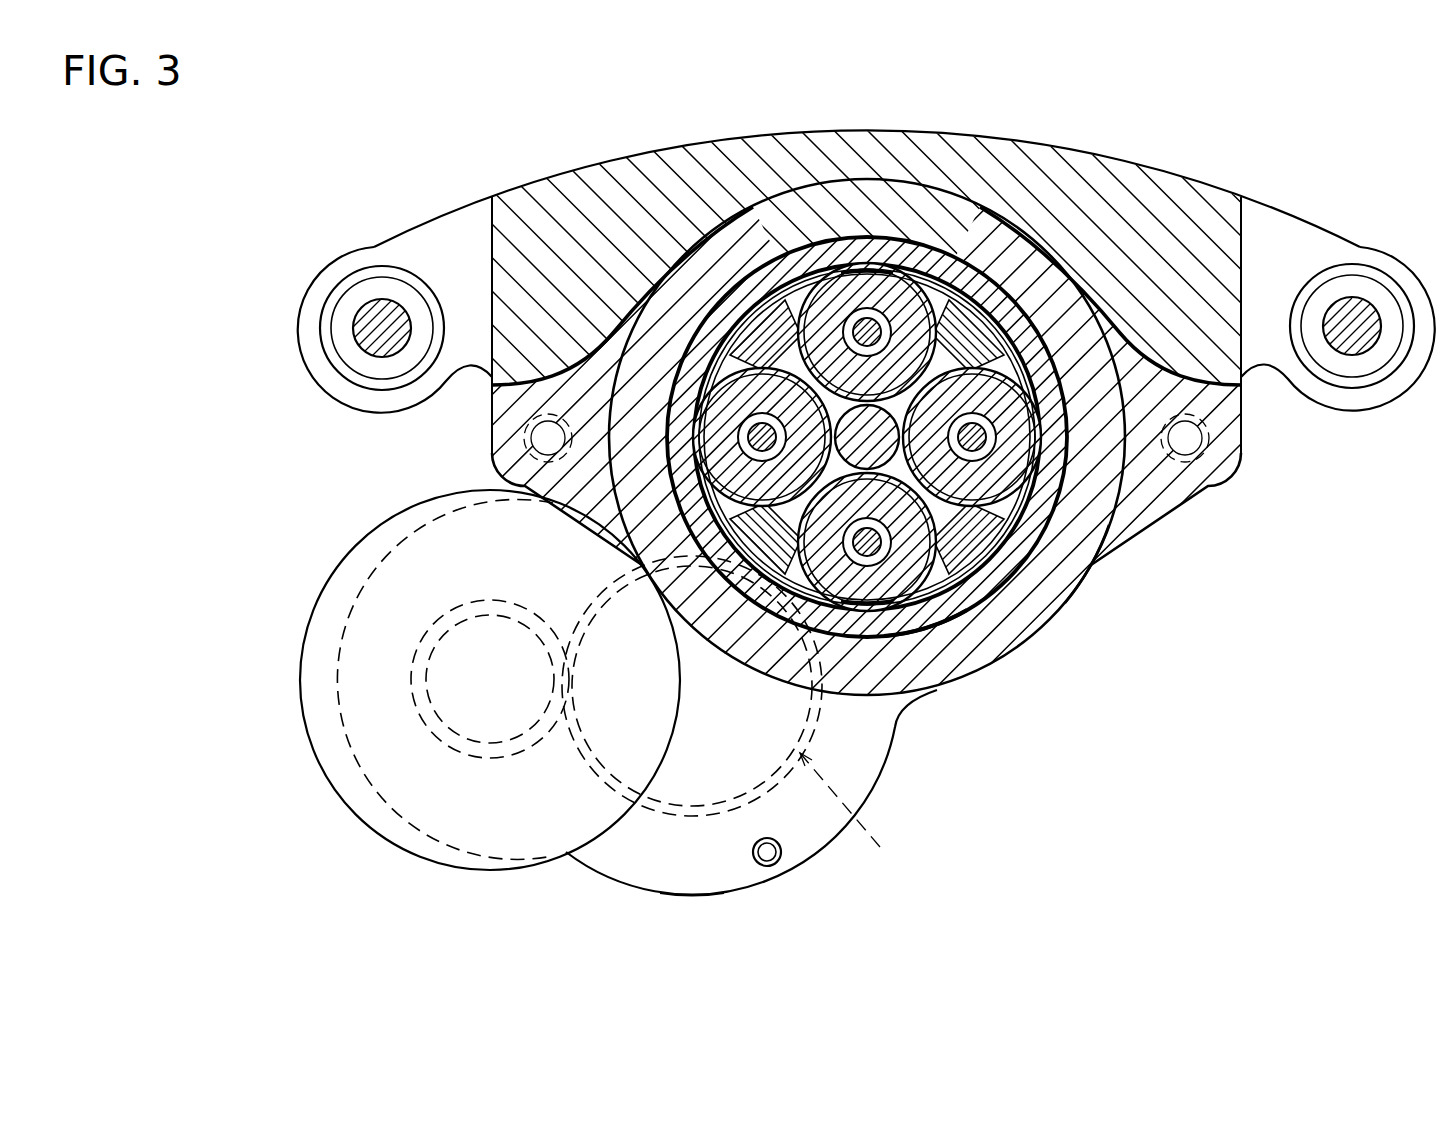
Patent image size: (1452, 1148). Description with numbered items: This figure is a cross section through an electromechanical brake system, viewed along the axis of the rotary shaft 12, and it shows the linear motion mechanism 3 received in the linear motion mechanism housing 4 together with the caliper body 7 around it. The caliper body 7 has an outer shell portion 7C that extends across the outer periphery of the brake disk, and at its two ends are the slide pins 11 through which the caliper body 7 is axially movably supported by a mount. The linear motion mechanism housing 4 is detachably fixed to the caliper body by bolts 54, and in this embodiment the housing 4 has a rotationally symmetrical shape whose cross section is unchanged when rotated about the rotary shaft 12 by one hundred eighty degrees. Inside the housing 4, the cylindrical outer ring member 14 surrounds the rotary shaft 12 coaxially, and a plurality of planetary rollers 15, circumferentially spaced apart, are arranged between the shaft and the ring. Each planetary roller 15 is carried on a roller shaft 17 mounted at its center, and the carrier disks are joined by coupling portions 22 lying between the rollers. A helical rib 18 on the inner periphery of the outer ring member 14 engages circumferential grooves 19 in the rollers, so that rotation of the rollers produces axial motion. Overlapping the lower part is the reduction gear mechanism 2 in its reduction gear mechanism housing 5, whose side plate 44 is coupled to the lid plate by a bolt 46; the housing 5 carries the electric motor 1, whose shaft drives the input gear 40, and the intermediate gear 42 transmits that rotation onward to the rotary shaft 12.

The electric motor 1 is at (314, 610).
The reduction gear mechanism 2 is at (851, 818).
The linear motion mechanism 3 is at (738, 272).
The linear motion mechanism housing 4 is at (1030, 617).
The reduction gear mechanism housing 5 is at (888, 755).
The caliper body 7 is at (990, 182).
The outer shell portion 7C is at (836, 150).
The slide pins 11 is at (373, 318).
The rotary shaft 12 is at (773, 250).
The outer ring member 14 is at (1062, 562).
The planetary rollers 15 is at (713, 405).
The roller shafts 17 is at (752, 420).
The helical rib 18 is at (918, 620).
The circumferential grooves 19 is at (950, 630).
The coupling portions 22 is at (745, 350).
The input gear 40 is at (455, 718).
The intermediate gear 42 is at (612, 830).
The side plate 44 is at (648, 882).
The bolt 46 is at (778, 860).
The bolts 54 is at (540, 438).